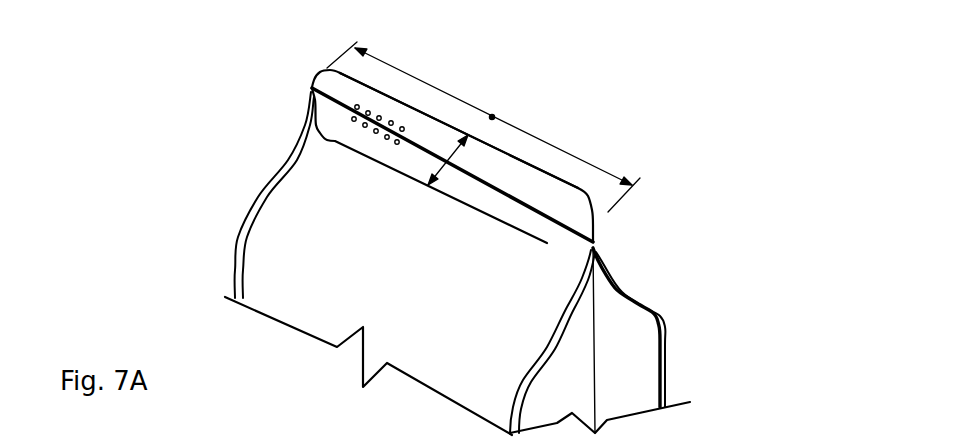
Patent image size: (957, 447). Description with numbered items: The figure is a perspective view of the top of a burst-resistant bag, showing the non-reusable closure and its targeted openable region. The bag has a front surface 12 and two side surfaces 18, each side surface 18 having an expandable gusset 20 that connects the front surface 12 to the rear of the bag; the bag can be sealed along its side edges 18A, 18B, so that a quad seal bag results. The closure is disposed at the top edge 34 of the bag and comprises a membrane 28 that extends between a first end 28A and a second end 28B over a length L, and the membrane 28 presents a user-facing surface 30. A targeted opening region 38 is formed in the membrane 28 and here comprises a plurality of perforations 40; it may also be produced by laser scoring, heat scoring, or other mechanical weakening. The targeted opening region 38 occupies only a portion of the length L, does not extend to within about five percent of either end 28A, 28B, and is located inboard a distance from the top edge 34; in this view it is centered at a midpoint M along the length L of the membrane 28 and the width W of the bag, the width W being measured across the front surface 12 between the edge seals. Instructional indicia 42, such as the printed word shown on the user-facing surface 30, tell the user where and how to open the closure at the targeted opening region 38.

The front surface 12 is at (258, 280).
The side surface 18 is at (643, 347).
The side edge 18A is at (528, 367).
The side edge 18B is at (663, 320).
The expandable gusset 20 is at (595, 367).
The membrane 28 is at (331, 142).
The end of membrane 28A is at (312, 88).
The end of membrane 28B is at (593, 243).
The user-facing surface 30 is at (432, 125).
The top edge 34 is at (312, 88).
The targeted opening region 38 is at (305, 122).
The perforations 40 is at (382, 169).
The instructional indicia 42 is at (402, 100).
The length of membrane L is at (483, 127).
The width W is at (538, 164).
The midpoint M is at (492, 117).